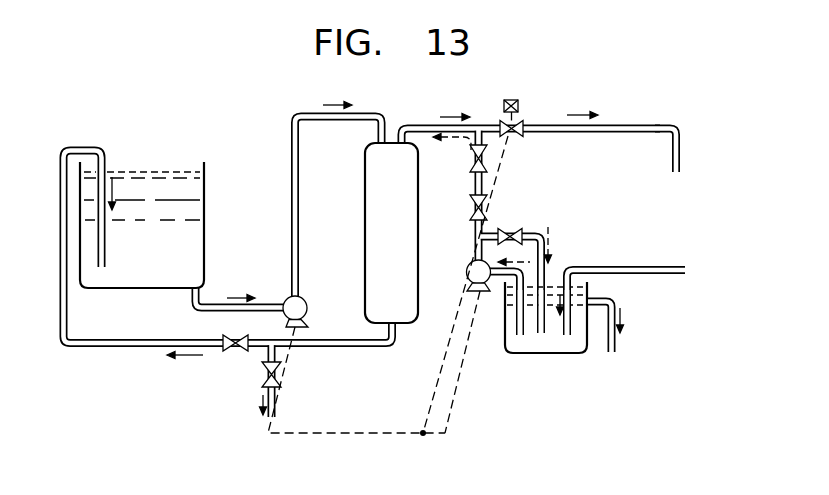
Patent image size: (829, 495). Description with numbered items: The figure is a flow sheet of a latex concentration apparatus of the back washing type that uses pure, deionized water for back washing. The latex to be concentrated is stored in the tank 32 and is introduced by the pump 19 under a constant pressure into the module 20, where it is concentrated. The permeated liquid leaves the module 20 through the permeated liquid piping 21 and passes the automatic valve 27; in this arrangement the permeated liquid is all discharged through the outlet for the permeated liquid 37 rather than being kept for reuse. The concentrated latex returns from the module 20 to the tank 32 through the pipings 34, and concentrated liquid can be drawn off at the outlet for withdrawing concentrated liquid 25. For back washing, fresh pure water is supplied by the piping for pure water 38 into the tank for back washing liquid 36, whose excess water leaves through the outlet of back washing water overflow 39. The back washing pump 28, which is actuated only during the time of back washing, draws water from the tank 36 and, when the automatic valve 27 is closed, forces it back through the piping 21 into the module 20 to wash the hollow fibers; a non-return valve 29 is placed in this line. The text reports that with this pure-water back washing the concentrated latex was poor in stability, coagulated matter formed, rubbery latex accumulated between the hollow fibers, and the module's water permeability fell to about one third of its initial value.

The pump 19 is at (307, 305).
The module 20 is at (365, 238).
The permeated liquid piping 21 is at (428, 125).
The outlet for withdrawing concentrated liquid 25 is at (278, 410).
The automatic valve 27 is at (518, 105).
The pump 28 is at (466, 270).
The non-return valve 29 is at (484, 162).
The tank 32 is at (204, 215).
The pipings 34 is at (120, 348).
The tank for back washing liquid 36 is at (545, 354).
The outlet for the permeated liquid 37 is at (672, 165).
The piping for pure water 38 is at (680, 274).
The outlet of back washing water overflow 39 is at (615, 345).